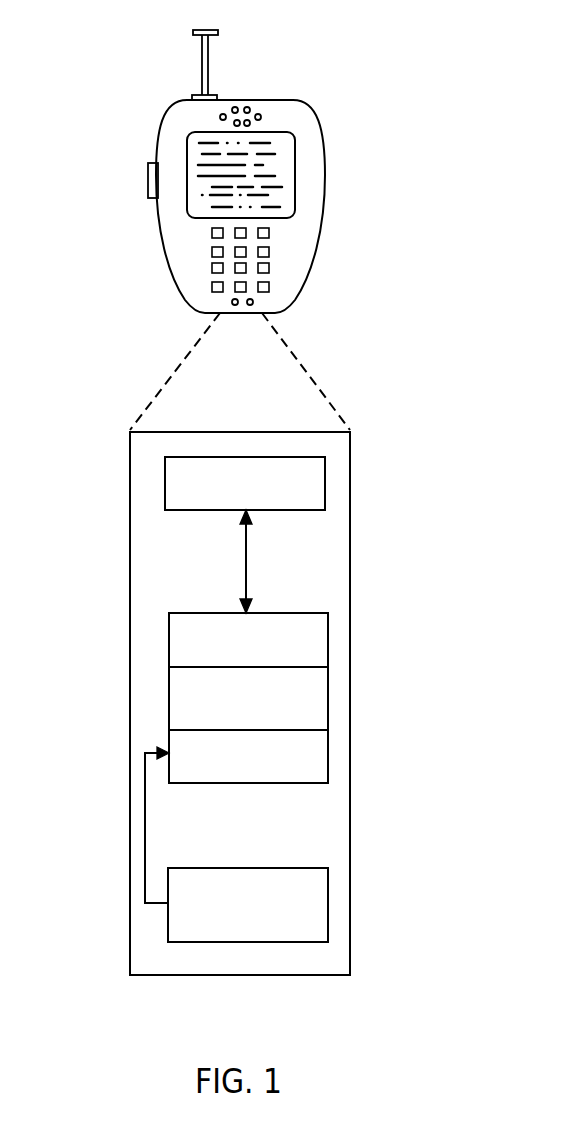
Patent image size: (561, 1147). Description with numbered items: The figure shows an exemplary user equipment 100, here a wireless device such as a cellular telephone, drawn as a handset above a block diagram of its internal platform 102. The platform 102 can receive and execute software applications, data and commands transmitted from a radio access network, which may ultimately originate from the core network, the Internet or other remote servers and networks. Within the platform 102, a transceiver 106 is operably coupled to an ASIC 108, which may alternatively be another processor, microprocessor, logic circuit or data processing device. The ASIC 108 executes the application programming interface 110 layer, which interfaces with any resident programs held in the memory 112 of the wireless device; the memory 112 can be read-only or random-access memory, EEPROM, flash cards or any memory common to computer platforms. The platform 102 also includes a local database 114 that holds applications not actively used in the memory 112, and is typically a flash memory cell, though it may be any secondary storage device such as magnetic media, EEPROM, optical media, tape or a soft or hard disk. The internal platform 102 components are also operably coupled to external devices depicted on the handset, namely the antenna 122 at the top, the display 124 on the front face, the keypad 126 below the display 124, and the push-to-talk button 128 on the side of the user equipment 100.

The user equipment 100 is at (303, 292).
The platform 102 is at (130, 615).
The transceiver 106 is at (325, 483).
The ASIC 108 is at (328, 643).
The application programming interface layer 110 is at (328, 700).
The memory 112 is at (328, 755).
The local database 114 is at (328, 888).
The antenna 122 is at (208, 45).
The display 124 is at (295, 163).
The keypad 126 is at (270, 251).
The push-to-talk button 128 is at (148, 173).